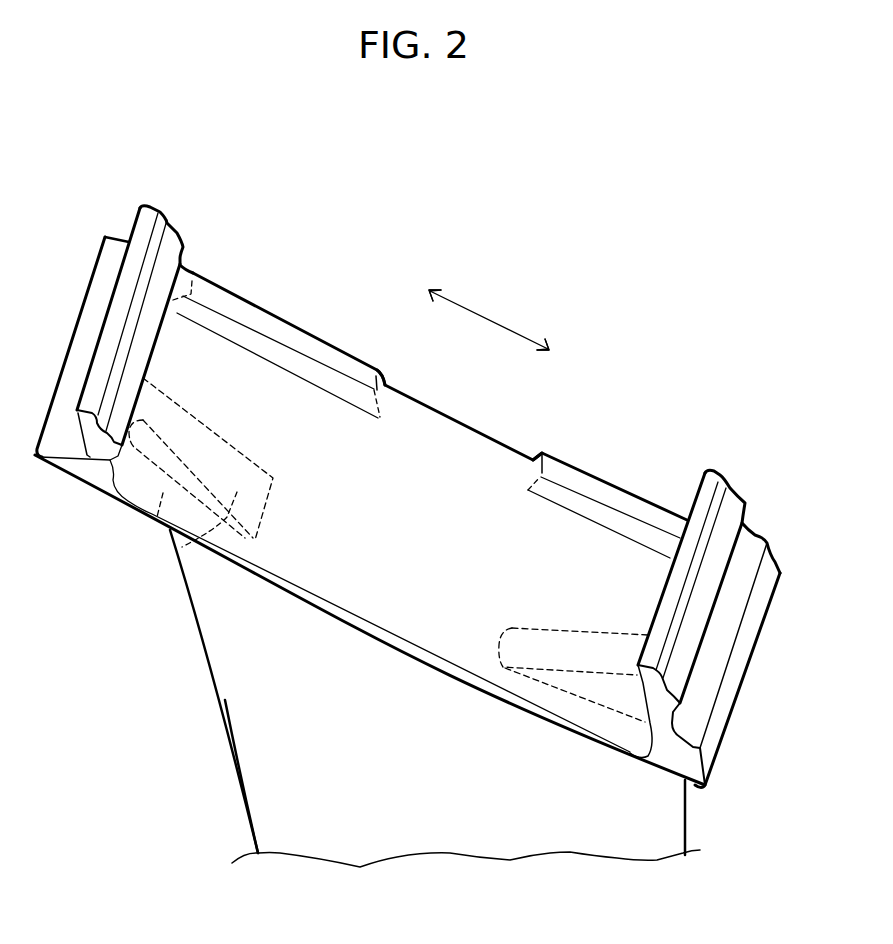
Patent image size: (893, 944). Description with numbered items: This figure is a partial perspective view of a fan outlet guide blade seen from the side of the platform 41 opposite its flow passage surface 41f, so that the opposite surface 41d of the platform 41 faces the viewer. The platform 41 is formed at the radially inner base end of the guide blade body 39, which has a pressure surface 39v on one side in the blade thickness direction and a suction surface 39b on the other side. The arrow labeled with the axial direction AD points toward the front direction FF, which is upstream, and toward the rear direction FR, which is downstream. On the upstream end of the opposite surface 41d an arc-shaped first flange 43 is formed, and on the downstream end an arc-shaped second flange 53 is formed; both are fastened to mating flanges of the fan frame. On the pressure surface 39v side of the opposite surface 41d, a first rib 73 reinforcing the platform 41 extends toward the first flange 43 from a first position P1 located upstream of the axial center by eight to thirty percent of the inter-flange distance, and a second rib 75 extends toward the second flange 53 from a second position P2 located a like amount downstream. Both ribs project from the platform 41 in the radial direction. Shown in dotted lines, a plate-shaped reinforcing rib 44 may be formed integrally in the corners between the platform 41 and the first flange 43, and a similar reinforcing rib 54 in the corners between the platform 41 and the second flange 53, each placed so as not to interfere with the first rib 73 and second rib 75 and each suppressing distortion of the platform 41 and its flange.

The guide blade body 39 is at (421, 698).
The pressure surface 39v is at (280, 700).
The suction surface 39b is at (287, 760).
The platform 41 is at (370, 529).
The opposite surface 41d is at (352, 598).
The flow passage surface 41f is at (150, 520).
The first flange 43 is at (147, 217).
The reinforcing rib 44 is at (193, 543).
The second flange 53 is at (708, 480).
The reinforcing rib 54 is at (540, 680).
The first rib 73 is at (287, 333).
The second rib 75 is at (603, 490).
The first position P1 is at (388, 403).
The second position P2 is at (525, 473).
The axial direction AD is at (489, 320).
The front direction FF is at (418, 288).
The rear direction FR is at (563, 356).